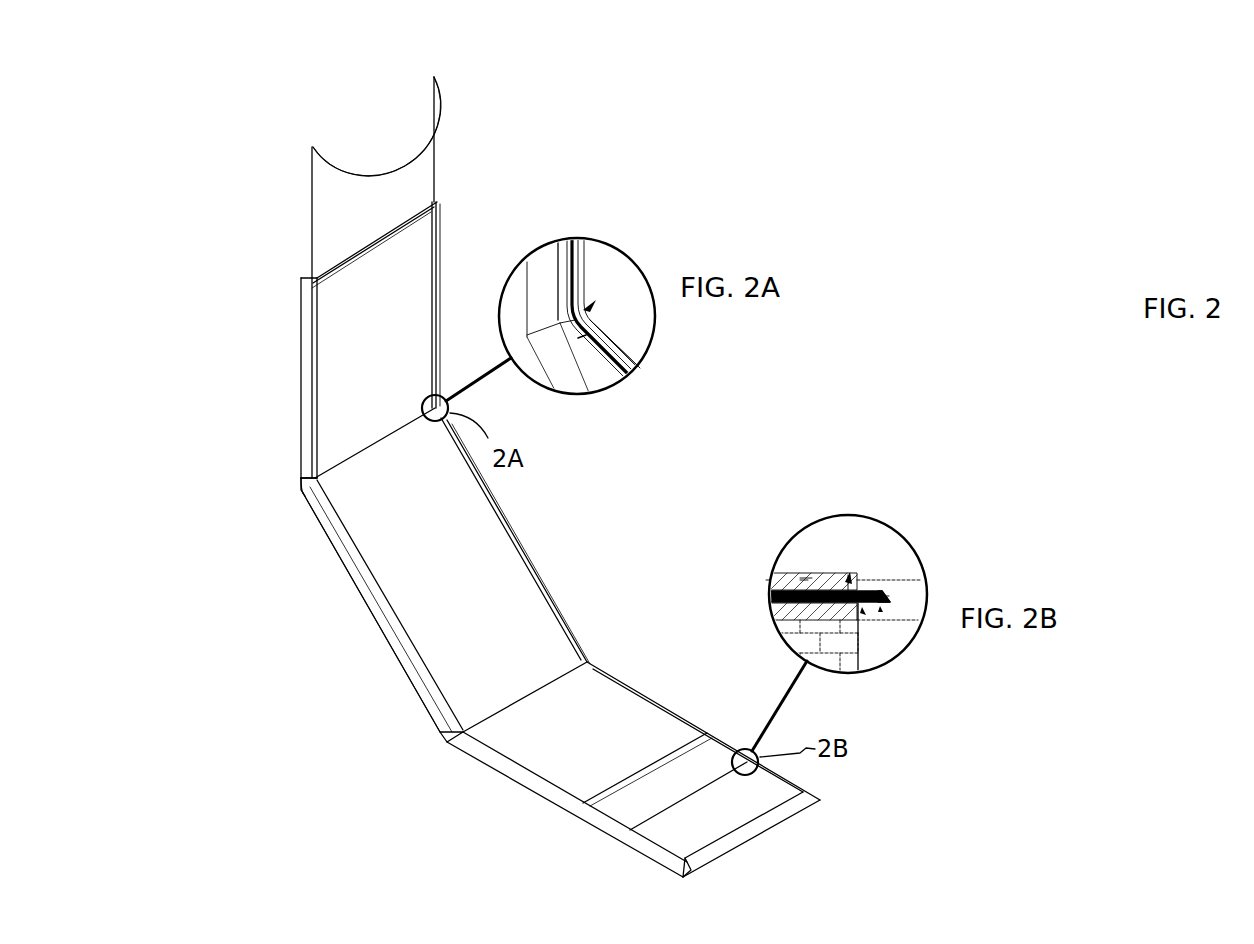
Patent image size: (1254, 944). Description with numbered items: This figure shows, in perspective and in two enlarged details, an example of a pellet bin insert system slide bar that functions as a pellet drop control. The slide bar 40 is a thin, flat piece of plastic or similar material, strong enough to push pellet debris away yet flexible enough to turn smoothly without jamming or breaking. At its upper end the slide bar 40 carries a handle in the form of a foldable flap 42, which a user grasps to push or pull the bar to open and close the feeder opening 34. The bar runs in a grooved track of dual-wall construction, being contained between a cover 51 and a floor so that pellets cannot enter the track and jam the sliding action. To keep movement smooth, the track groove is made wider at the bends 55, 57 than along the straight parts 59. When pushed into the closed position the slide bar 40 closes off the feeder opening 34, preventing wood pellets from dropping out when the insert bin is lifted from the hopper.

In FIG. 2, the feeder opening 34 is at (710, 750).
In FIG. 2, the slide bar 40 is at (304, 221).
In FIG. 2A, the slide bar 40 is at (576, 277).
In FIG. 2, the foldable flap 42 is at (425, 113).
In FIG. 2, the cover 51 is at (423, 530).
In FIG. 2, the bend 55 is at (265, 480).
In FIG. 2, the bend 57 is at (411, 735).
In FIG. 2, the straight part 59 is at (352, 612).